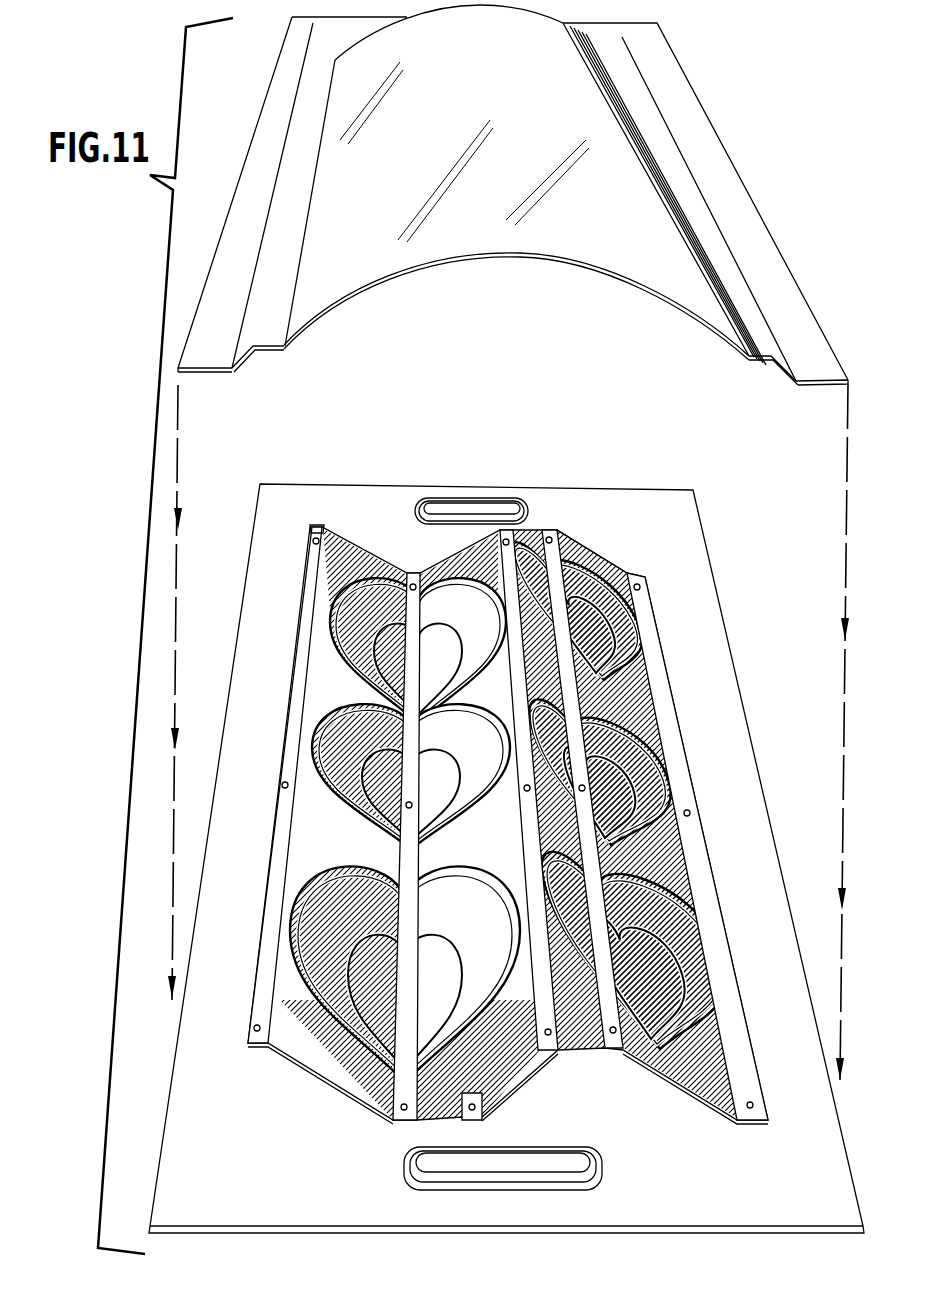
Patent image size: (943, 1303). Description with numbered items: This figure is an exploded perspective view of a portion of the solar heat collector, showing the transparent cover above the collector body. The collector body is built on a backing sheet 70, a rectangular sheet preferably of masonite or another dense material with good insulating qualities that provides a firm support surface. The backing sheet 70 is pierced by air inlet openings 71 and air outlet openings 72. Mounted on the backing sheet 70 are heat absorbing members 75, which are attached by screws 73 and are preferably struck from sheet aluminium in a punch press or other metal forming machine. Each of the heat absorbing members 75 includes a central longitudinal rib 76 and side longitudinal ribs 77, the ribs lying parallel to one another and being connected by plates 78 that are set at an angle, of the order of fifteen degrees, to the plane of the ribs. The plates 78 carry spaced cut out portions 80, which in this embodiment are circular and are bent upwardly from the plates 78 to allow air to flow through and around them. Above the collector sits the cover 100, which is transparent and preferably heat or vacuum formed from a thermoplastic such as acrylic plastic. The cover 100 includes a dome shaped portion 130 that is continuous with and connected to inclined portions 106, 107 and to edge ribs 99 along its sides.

The backing sheet 70 is at (626, 530).
The air inlet openings 71 is at (523, 1164).
The air outlet openings 72 is at (466, 504).
The screws 73 is at (647, 585).
The heat absorbing members 75 is at (313, 527).
The central longitudinal rib 76 is at (551, 530).
The side longitudinal ribs 77 is at (675, 725).
The plates 78 is at (303, 1072).
The cut out portions 80 is at (533, 533).
The edge ribs 99 is at (265, 112).
The cover 100 is at (722, 109).
The inclined portion 106 is at (248, 358).
The inclined portion 107 is at (270, 350).
The dome shaped portion 130 is at (455, 245).